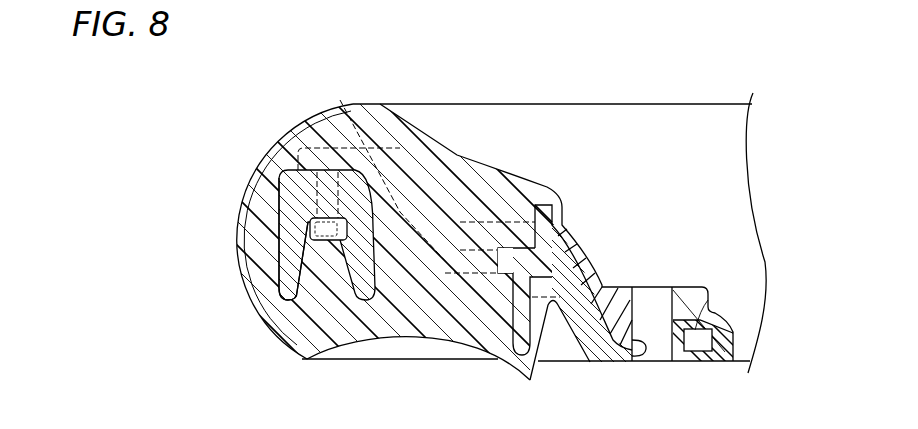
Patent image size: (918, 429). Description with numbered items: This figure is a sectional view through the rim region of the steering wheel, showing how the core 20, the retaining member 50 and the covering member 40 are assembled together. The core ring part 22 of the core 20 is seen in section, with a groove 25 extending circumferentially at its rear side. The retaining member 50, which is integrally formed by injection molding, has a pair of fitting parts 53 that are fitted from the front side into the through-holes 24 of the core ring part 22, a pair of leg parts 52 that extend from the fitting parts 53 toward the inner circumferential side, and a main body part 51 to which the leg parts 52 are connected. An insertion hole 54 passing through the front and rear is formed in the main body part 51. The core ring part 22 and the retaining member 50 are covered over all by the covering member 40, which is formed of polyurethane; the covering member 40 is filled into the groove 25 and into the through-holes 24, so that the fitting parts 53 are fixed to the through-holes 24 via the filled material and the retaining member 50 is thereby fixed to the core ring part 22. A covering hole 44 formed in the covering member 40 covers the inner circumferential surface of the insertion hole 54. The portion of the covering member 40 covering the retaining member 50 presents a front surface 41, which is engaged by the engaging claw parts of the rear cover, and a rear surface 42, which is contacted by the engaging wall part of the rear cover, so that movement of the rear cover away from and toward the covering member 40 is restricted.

The core 20 is at (272, 287).
The core ring part 22 is at (278, 258).
The through-holes 24 is at (303, 150).
The groove 25 is at (318, 240).
The covering member 40 is at (557, 104).
The front surface 41 is at (685, 287).
The rear surface 42 is at (698, 362).
The covering hole 44 is at (638, 287).
The retaining member 50 is at (776, 308).
The main body part 51 is at (708, 300).
The leg parts 52 is at (345, 117).
The fitting parts 53 is at (312, 202).
The insertion hole 54 is at (638, 345).